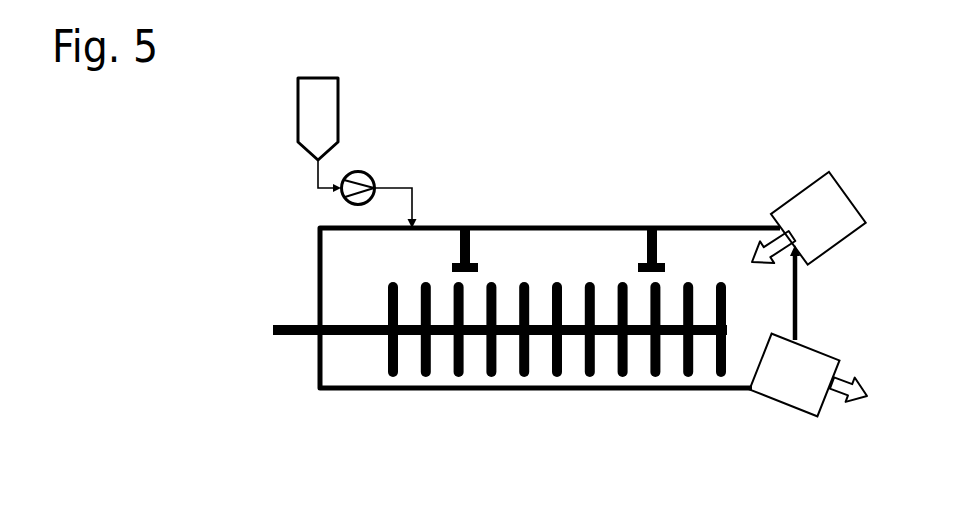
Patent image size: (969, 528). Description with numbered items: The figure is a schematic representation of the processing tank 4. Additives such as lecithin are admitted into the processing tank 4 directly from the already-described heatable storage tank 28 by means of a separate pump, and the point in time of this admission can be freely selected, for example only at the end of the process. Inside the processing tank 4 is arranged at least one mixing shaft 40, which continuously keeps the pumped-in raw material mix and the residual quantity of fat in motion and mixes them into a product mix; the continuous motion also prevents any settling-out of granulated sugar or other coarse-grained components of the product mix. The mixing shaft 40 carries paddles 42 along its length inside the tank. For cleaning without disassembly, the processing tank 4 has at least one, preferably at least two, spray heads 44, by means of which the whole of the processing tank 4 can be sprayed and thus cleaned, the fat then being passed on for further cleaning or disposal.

The processing tank 4 is at (243, 435).
The heatable storage tank 28 is at (300, 112).
The mixing shaft 40 is at (273, 330).
The paddles 42 is at (492, 387).
The spray heads 44 is at (466, 228).